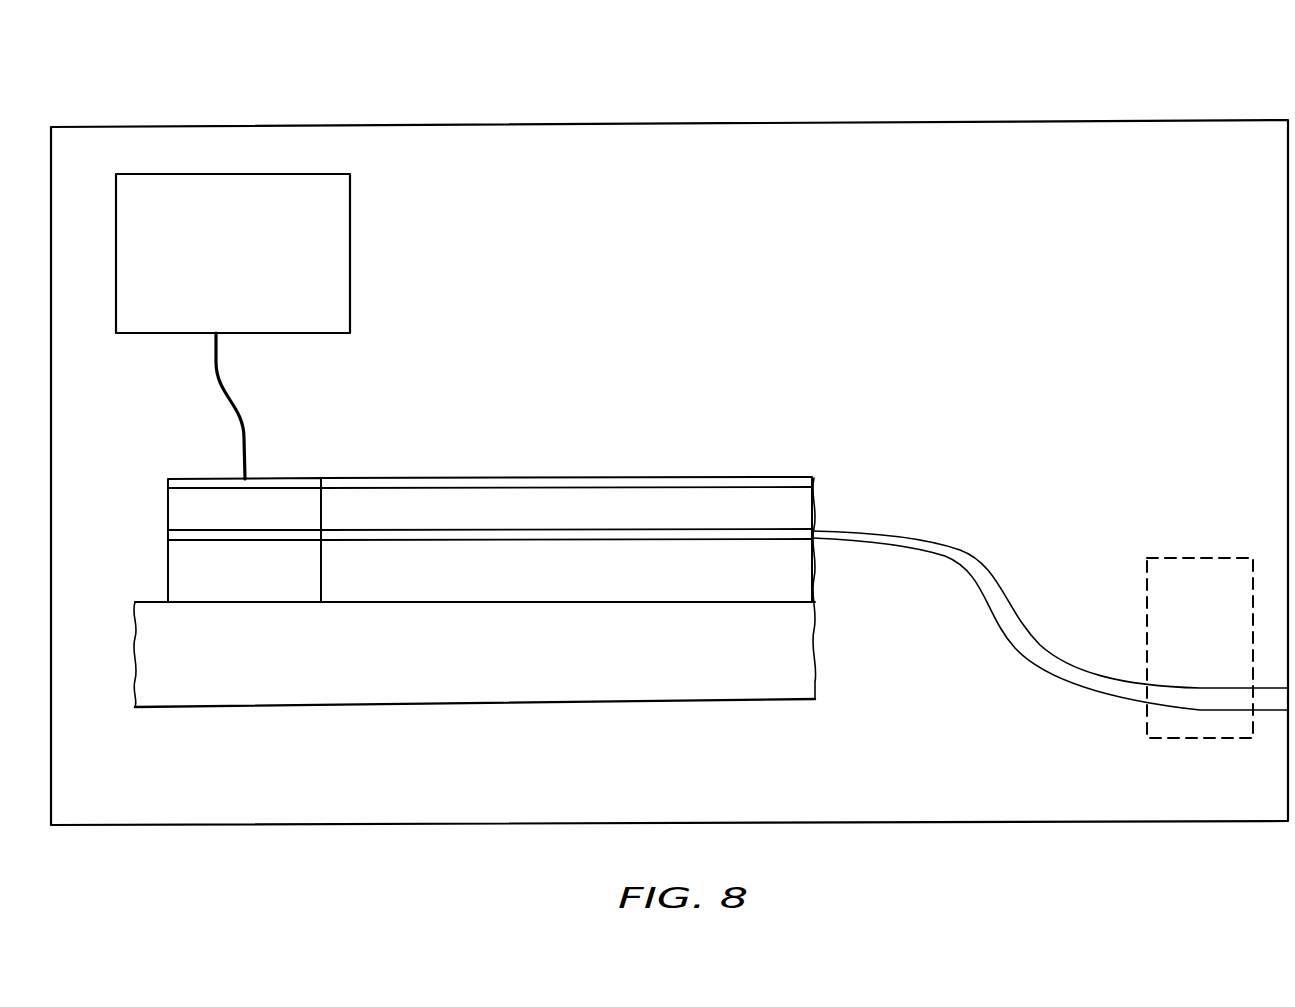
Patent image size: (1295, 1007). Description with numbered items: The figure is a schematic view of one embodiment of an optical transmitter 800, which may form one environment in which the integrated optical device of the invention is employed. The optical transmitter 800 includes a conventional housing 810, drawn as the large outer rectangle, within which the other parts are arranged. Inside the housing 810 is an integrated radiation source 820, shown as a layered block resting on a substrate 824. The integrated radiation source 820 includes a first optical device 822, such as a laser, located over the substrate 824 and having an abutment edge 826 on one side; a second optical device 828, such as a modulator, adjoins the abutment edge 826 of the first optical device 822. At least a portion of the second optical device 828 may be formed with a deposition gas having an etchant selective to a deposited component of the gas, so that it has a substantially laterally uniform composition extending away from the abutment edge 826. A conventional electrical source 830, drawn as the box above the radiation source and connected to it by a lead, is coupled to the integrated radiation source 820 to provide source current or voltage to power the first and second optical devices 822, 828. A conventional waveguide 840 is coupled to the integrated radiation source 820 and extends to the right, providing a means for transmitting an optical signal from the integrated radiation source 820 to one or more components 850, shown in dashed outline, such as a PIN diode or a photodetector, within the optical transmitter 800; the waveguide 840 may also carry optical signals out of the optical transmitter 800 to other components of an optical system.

The optical transmitter 800 is at (196, 98).
The housing 810 is at (932, 120).
The integrated radiation source 820 is at (449, 704).
The first optical device 822 is at (322, 609).
The substrate 824 is at (148, 662).
The abutment edge 826 is at (323, 575).
The second optical device 828 is at (802, 609).
The electrical source 830 is at (351, 247).
The waveguide 840 is at (1018, 604).
The components 850 is at (1177, 557).